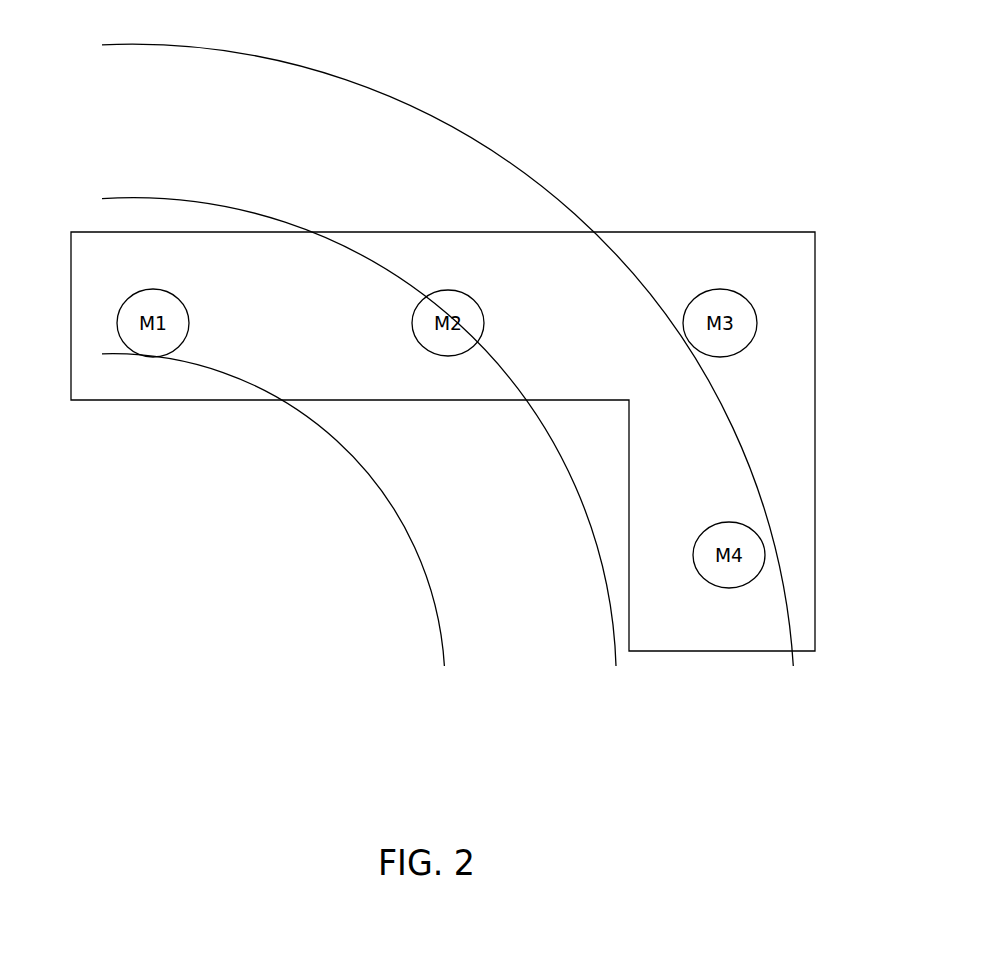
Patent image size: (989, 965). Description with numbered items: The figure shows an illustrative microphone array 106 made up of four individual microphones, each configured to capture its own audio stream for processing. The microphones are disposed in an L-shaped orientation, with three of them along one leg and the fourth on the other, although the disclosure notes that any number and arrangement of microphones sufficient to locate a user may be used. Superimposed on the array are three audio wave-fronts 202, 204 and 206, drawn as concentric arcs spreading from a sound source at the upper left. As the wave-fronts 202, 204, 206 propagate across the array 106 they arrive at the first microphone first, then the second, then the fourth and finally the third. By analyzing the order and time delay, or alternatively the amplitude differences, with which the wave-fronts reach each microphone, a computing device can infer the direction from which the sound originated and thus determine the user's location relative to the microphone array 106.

The microphone array 106 is at (709, 233).
The audio wave-front 202 is at (440, 627).
The audio wave-front 204 is at (612, 623).
The audio wave-front 206 is at (790, 623).